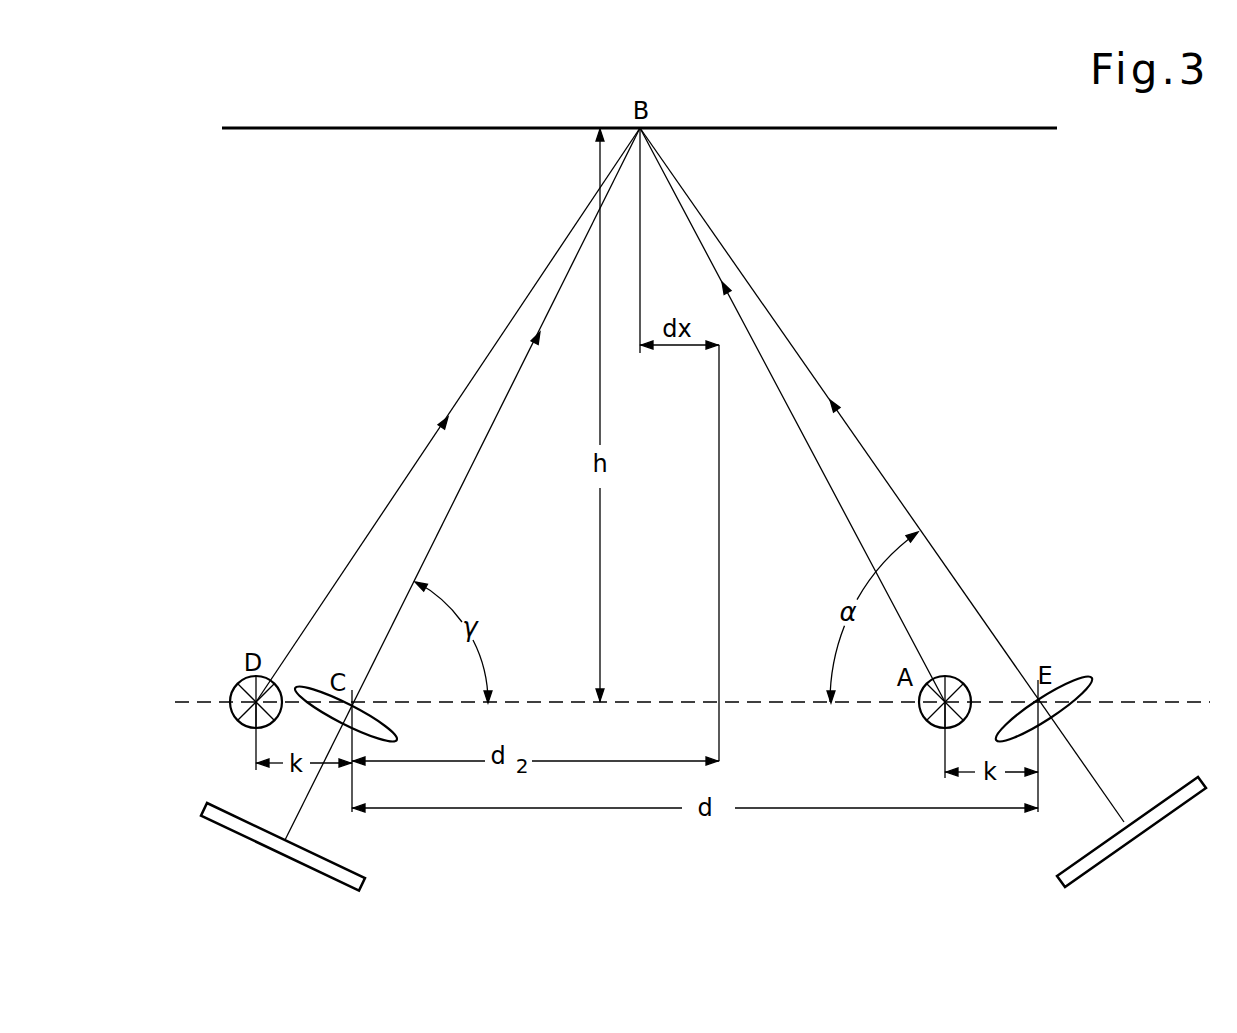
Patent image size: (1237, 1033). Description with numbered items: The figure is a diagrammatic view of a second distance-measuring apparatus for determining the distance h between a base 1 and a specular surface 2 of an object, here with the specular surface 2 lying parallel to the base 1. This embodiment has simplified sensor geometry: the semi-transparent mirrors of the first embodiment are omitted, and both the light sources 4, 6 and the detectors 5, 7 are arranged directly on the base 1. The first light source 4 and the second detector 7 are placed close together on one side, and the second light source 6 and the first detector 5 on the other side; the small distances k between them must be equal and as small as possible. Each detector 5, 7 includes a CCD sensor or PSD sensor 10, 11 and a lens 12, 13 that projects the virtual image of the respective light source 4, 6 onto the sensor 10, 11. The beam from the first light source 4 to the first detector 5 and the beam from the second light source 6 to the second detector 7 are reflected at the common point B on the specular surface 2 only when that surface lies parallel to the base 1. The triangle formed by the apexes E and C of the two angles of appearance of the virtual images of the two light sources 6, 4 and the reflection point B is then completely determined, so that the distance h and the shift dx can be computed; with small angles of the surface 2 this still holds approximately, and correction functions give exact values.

The base 1 is at (1157, 702).
The specular surface 2 is at (925, 131).
The first light source 4 is at (930, 725).
The first detector 5 is at (256, 812).
The second light source 6 is at (232, 726).
The second detector 7 is at (1113, 765).
The CCD sensor or PSD sensor 10 is at (363, 870).
The CCD sensor or PSD sensor 11 is at (1062, 872).
The lens 12 is at (396, 740).
The lens 13 is at (1077, 680).